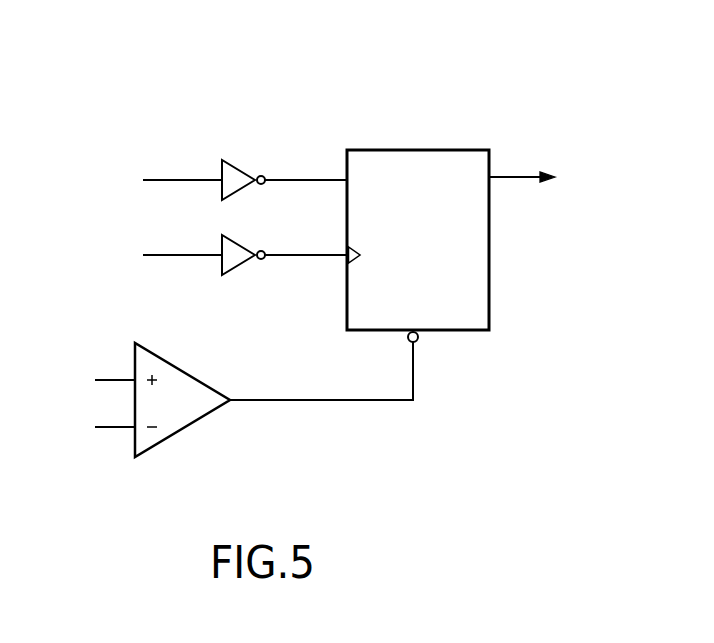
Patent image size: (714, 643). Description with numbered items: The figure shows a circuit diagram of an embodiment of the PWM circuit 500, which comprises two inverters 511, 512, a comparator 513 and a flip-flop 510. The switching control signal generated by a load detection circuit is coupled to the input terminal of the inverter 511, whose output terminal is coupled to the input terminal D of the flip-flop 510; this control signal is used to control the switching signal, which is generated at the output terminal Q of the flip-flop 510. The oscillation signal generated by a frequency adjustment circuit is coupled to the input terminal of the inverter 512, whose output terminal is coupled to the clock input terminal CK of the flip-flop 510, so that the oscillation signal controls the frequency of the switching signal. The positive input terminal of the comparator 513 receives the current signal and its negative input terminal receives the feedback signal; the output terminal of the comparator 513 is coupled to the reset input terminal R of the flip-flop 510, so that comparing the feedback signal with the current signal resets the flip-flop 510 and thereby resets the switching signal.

The PWM circuit 500 is at (557, 50).
The flip-flop 510 is at (420, 228).
The inverter 511 is at (267, 166).
The inverter 512 is at (267, 241).
The comparator 513 is at (155, 354).